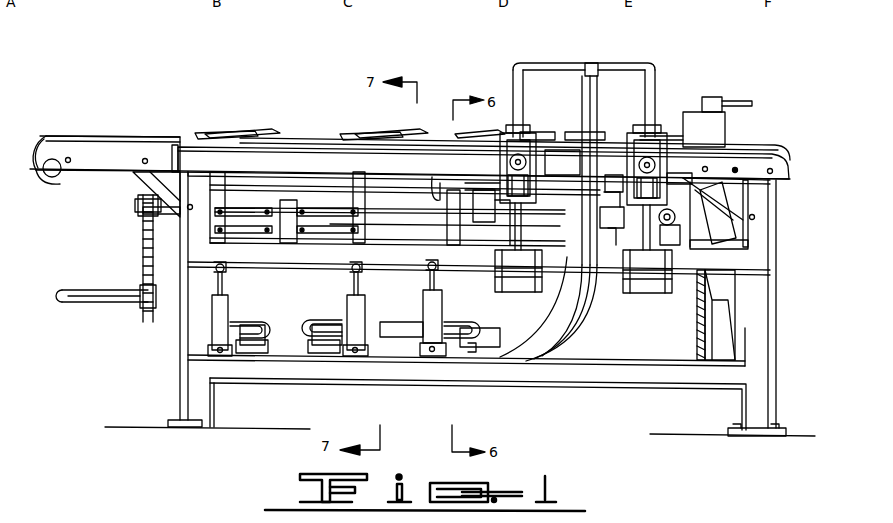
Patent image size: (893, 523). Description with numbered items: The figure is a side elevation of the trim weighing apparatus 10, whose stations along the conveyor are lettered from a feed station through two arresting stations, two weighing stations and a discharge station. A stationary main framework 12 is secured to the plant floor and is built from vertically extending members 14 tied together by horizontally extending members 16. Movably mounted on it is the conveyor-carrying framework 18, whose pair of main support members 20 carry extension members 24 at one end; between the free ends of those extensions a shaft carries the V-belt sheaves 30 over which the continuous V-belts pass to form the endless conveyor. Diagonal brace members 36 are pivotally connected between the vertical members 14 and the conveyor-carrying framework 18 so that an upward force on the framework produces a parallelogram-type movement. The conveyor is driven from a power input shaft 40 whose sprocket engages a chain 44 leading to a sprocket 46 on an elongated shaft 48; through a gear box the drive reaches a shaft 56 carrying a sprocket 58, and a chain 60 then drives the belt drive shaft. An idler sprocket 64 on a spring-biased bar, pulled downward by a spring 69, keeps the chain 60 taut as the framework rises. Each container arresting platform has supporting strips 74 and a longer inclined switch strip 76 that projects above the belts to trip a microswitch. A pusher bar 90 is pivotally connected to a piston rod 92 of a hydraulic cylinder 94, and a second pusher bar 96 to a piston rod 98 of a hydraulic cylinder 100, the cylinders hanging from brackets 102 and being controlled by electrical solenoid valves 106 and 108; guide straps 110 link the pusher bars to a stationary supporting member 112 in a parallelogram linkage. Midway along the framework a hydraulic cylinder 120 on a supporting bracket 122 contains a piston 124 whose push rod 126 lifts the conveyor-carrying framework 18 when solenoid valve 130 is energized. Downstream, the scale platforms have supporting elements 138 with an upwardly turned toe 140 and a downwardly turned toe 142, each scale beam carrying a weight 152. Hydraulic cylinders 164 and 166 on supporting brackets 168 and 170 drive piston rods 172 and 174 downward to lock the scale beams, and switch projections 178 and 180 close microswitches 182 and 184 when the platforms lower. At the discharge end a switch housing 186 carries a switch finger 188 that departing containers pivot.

The trim weighing apparatus 10 is at (155, 345).
The stationary main framework 12 is at (565, 389).
The vertically extending members 14 is at (207, 254).
The horizontally extending members 16 is at (222, 272).
The conveyor-carrying framework 18 is at (115, 182).
The main support members 20 is at (357, 165).
The extension members 24 is at (103, 160).
The V-belt supporting sheaves 30 is at (50, 178).
The diagonal brace members 36 is at (173, 190).
The power input shaft 40 is at (96, 288).
The chain 44 is at (142, 256).
The sprocket 46 is at (135, 212).
The elongated shaft 48 is at (380, 220).
The shaft 56 is at (670, 229).
The sprocket 58 is at (706, 226).
The chain 60 is at (745, 222).
The idler sprocket 64 is at (696, 196).
The spring 69 is at (697, 330).
The supporting strips 74 is at (218, 133).
The inclined switch strip 76 is at (264, 130).
The pusher bar 90 is at (225, 180).
The piston rod 92 is at (225, 282).
The hydraulic cylinder 94 is at (229, 312).
The pusher bar 96 is at (352, 178).
The piston rod 98 is at (352, 281).
The hydraulic cylinder 100 is at (346, 312).
The brackets 102 is at (210, 350).
The electrical solenoid valve 106 is at (248, 352).
The electrical solenoid valve 108 is at (331, 353).
The guide straps 110 is at (237, 210).
The stationary supporting member 112 is at (291, 245).
The hydraulic cylinder 120 is at (424, 300).
The supporting bracket 122 is at (448, 352).
The piston 124 is at (428, 272).
The push rod 126 is at (432, 200).
The electrical solenoid valve 130 is at (402, 352).
The supporting elements 138 is at (580, 131).
The upwardly turned toe 140 is at (752, 143).
The downwardly turned toe 142 is at (460, 134).
The weight 152 is at (521, 274).
The hydraulic cylinder 164 is at (512, 78).
The hydraulic cylinder 166 is at (656, 82).
The supporting bracket 168 is at (505, 137).
The supporting bracket 170 is at (652, 128).
The piston rod 172 is at (533, 142).
The piston rod 174 is at (634, 136).
The switch projection 178 is at (490, 178).
The switch projection 180 is at (605, 181).
The microswitch 182 is at (485, 222).
The microswitch 184 is at (620, 215).
The switch housing 186 is at (716, 128).
The switch finger 188 is at (740, 96).